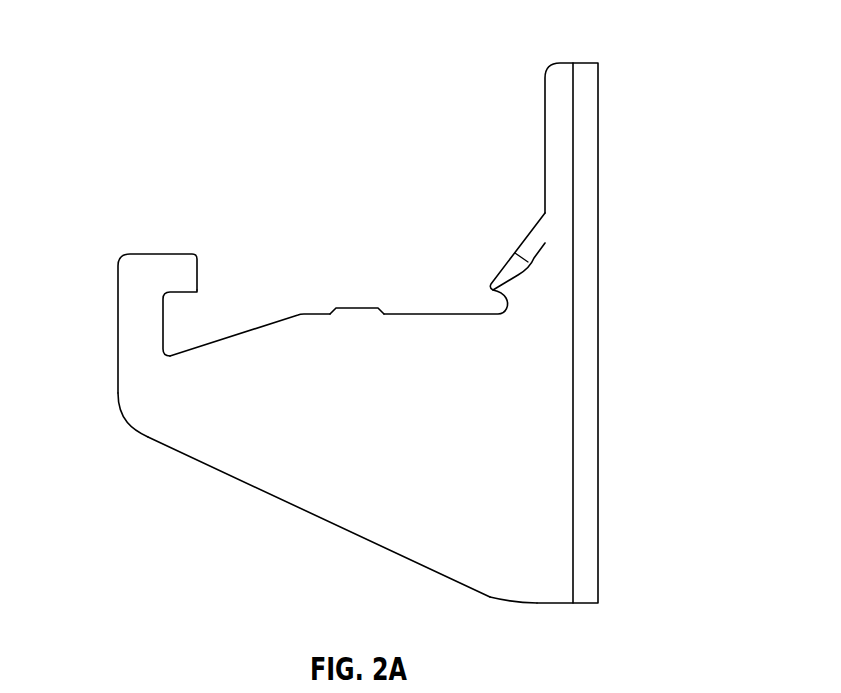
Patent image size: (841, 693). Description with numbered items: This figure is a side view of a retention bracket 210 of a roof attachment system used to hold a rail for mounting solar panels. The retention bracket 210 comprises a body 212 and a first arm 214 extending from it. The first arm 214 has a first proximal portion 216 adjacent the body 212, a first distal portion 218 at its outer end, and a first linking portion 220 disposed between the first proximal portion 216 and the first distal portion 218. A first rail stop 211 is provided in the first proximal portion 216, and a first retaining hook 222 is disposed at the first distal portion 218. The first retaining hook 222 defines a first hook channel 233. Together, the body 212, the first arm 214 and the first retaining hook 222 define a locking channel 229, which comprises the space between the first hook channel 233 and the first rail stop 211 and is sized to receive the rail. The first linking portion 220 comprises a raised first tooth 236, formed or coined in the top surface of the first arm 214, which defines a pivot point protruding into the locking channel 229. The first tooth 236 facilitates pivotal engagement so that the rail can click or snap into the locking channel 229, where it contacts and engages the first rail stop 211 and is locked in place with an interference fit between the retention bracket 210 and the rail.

The retention bracket 210 is at (672, 43).
The body 212 is at (598, 170).
The first rail stop 211 is at (510, 277).
The first proximal portion 216 is at (480, 315).
The first tooth 236 is at (358, 307).
The locking channel 229 is at (298, 313).
The first hook channel 233 is at (163, 330).
The first retaining hook 222 is at (117, 320).
The first distal portion 218 is at (178, 425).
The first arm 214 is at (233, 478).
The first linking portion 220 is at (370, 510).